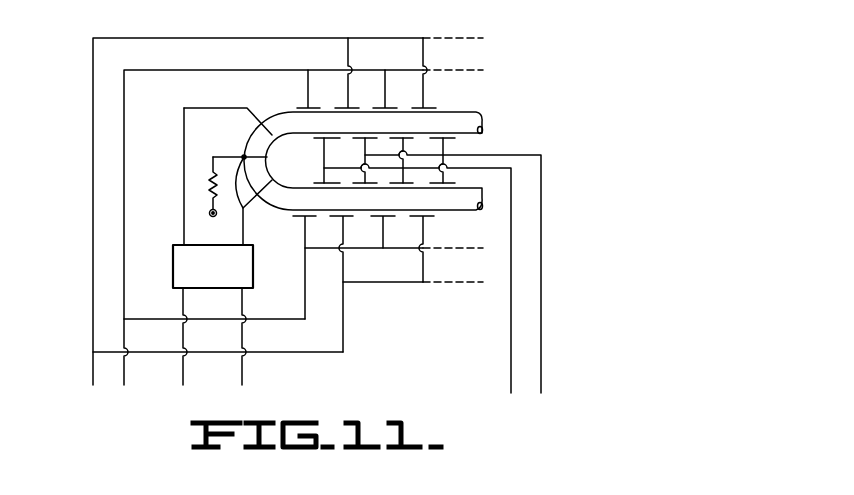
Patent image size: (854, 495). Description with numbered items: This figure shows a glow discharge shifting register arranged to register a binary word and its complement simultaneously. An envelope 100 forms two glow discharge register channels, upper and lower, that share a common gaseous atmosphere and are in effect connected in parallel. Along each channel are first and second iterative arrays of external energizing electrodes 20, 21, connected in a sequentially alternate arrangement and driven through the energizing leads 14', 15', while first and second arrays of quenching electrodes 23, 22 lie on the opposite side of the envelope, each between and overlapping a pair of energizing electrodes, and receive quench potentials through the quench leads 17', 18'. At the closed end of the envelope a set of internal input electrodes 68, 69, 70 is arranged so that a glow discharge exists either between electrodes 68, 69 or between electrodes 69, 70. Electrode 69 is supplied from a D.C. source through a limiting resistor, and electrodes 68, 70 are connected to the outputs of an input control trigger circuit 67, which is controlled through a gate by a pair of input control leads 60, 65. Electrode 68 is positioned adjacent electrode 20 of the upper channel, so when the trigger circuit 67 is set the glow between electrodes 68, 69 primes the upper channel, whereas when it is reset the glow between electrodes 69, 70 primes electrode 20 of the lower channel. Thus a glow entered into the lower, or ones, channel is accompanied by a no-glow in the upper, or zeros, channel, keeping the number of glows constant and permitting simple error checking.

The energizing lead 14' is at (265, 211).
The energizing lead 15' is at (303, 227).
The quench lead 17' is at (417, 278).
The quench lead 18' is at (480, 273).
The energizing electrodes 20 is at (301, 106).
The energizing electrodes 21 is at (346, 106).
The quenching electrodes 22 is at (377, 136).
The quenching electrodes 23 is at (323, 139).
The input control lead 60 is at (242, 366).
The input control lead 65 is at (183, 366).
The input control trigger circuit 67 is at (173, 258).
The input electrode 68 is at (253, 122).
The input electrode 69 is at (231, 201).
The input electrode 70 is at (262, 196).
The envelope 100 is at (460, 114).